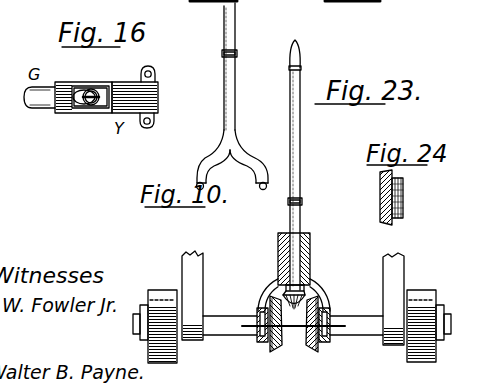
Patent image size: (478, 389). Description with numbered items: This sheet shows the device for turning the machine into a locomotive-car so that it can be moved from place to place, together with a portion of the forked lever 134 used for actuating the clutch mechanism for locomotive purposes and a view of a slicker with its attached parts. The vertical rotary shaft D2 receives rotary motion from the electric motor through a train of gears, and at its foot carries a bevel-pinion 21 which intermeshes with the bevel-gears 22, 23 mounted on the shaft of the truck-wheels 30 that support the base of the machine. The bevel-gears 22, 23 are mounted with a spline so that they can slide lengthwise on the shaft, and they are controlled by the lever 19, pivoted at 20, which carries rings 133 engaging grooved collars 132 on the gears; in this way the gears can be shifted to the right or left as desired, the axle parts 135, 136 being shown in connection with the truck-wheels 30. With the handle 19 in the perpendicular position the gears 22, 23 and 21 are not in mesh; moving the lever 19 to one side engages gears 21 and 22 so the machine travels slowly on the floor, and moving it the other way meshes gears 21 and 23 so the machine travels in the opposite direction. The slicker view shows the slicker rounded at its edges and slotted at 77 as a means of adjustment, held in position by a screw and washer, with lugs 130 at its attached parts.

In FIG. 16, the slot 77 is at (82, 103).
In FIG. 16, the lugs 130 is at (163, 100).
In FIG. 10, the fork 134 is at (236, 147).
In FIG. 23, the lever 19 is at (301, 98).
In FIG. 23, the pivot 20 is at (302, 201).
In FIG. 23, the vertical rotary shaft D2 is at (297, 261).
In FIG. 23, the bevel-pinion 21 is at (273, 284).
In FIG. 23, the rings 133 is at (309, 283).
In FIG. 23, the grooved collar 132 is at (327, 345).
In FIG. 24, the grooved collar 132 is at (404, 212).
In FIG. 23, the bevel-gear 22 is at (272, 334).
In FIG. 23, the bevel-gear 23 is at (307, 334).
In FIG. 23, the shaft sleeve 135 is at (209, 332).
In FIG. 23, the shaft 136 is at (340, 320).
In FIG. 23, the truck-wheels 30 is at (292, 337).